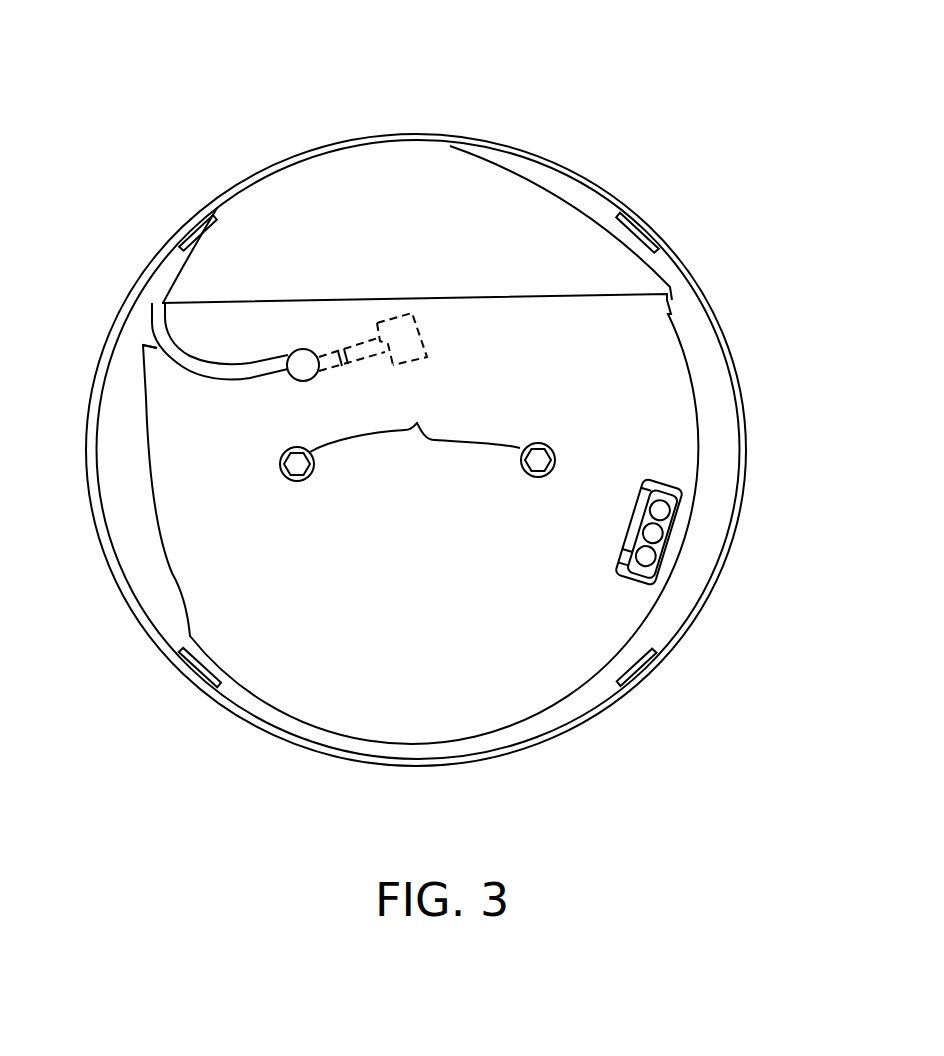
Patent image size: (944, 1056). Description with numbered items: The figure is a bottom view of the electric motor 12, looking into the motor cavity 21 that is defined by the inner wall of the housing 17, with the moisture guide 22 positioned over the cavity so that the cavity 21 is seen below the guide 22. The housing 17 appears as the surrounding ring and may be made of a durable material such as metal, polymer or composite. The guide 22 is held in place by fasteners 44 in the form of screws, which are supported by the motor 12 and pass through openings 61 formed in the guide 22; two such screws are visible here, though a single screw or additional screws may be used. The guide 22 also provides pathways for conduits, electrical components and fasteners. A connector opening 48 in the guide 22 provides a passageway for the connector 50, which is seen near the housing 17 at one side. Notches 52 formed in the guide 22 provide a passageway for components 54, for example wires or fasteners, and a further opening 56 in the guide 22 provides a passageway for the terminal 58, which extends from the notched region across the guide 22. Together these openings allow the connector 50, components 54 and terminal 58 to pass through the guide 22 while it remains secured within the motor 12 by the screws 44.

The motor 12 is at (696, 107).
The housing 17 is at (538, 158).
The motor cavity 21 is at (332, 677).
The guide 22 is at (547, 663).
The fasteners 44 is at (415, 423).
The connector opening 48 is at (680, 481).
The connector 50 is at (672, 540).
The notches 52 is at (177, 305).
The components 54 is at (165, 362).
The opening 56 is at (304, 349).
The terminal 58 is at (262, 357).
The openings 61 is at (522, 470).